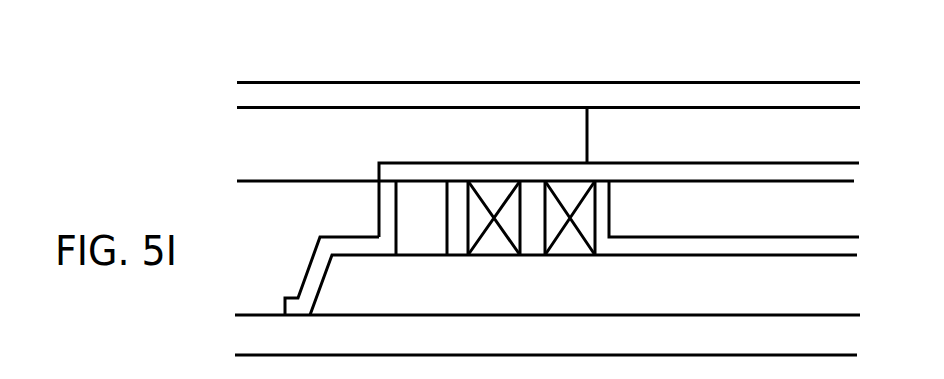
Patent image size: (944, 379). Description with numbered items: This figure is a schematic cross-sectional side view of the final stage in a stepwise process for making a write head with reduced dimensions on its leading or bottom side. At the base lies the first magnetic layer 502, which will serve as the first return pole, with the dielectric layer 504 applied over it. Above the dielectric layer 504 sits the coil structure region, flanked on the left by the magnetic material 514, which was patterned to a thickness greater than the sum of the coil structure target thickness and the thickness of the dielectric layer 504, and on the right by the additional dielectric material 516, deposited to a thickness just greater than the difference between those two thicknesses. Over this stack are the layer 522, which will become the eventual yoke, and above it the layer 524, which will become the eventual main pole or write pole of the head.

The first magnetic layer 502 is at (509, 344).
The dielectric layer 504 is at (509, 294).
The magnetic material 514 is at (292, 229).
The additional dielectric material 516 is at (751, 213).
The layer 522 is at (434, 143).
The layer 524 is at (464, 82).